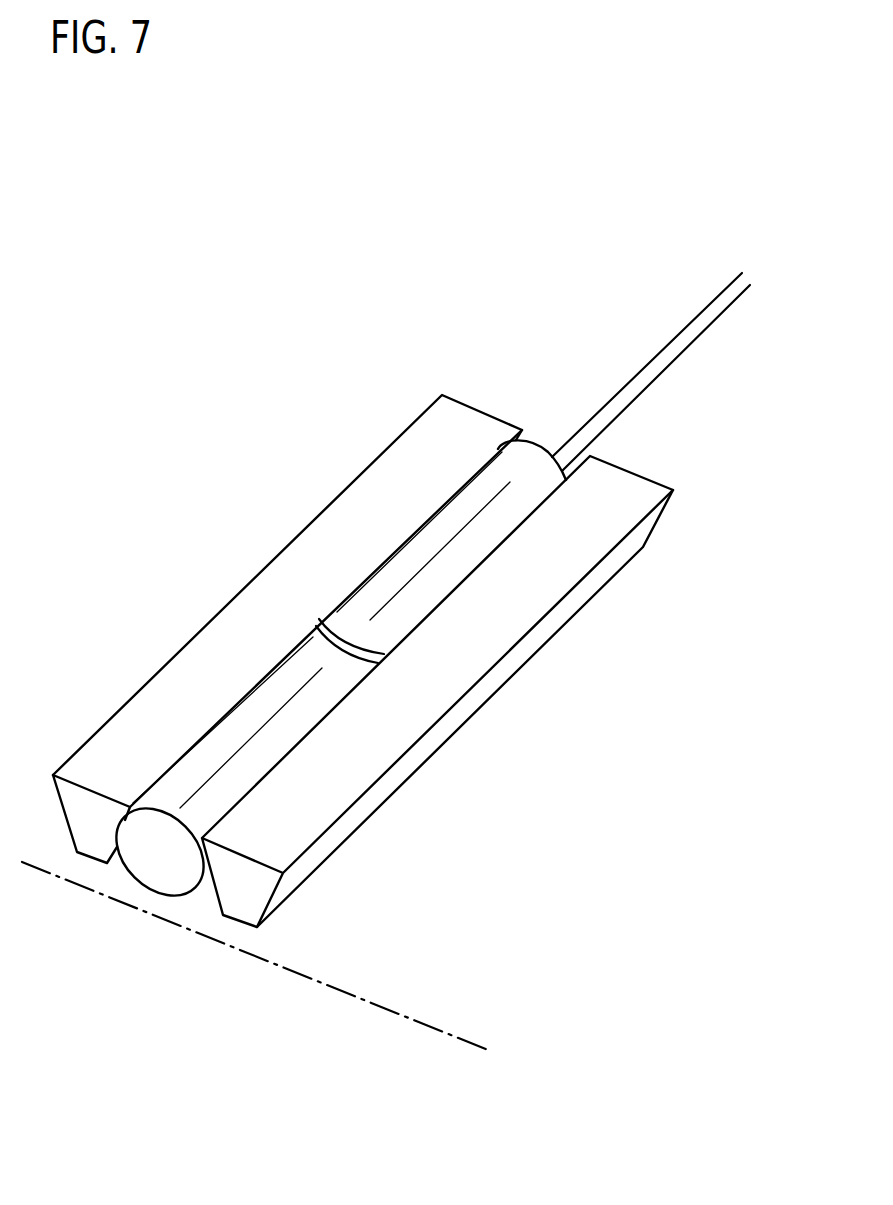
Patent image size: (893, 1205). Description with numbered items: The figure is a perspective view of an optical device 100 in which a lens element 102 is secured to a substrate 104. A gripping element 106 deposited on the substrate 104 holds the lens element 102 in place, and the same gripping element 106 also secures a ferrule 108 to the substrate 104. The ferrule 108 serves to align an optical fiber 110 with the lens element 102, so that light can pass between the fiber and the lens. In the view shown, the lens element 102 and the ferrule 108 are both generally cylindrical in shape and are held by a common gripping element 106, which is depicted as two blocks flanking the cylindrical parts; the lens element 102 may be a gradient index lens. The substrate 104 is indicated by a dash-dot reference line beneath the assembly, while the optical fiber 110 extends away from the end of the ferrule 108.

The optical device 100 is at (218, 368).
The lens element 102 is at (252, 725).
The substrate 104 is at (338, 963).
The gripping element 106 is at (295, 582).
The ferrule 108 is at (467, 513).
The optical fiber 110 is at (678, 343).